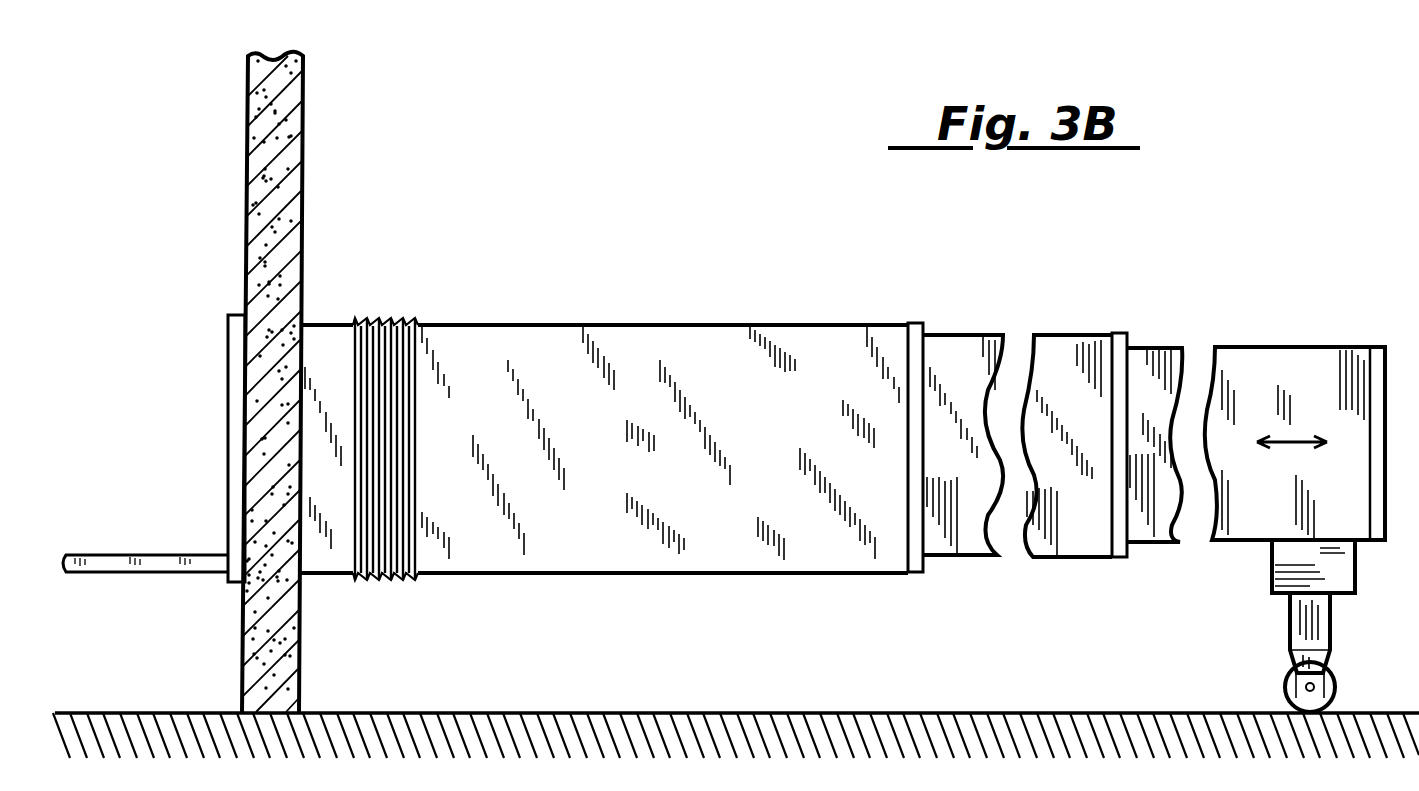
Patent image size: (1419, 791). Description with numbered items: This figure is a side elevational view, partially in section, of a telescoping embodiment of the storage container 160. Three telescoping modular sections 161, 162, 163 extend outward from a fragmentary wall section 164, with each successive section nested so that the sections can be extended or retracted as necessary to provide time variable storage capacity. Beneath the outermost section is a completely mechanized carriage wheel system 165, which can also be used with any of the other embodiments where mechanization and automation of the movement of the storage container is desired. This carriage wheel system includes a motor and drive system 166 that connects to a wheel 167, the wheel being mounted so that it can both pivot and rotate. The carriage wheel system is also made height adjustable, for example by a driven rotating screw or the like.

The extensible boom assembly 160 is at (776, 188).
The telescoping modular section 161 is at (660, 323).
The telescoping modular section 162 is at (1068, 333).
The telescoping modular section 163 is at (1300, 345).
The fragmentary wall section 164 is at (248, 143).
The mechanized carriage wheel system 165 is at (1256, 624).
The motor and drive system 166 is at (1295, 557).
The wheel 167 is at (1290, 685).